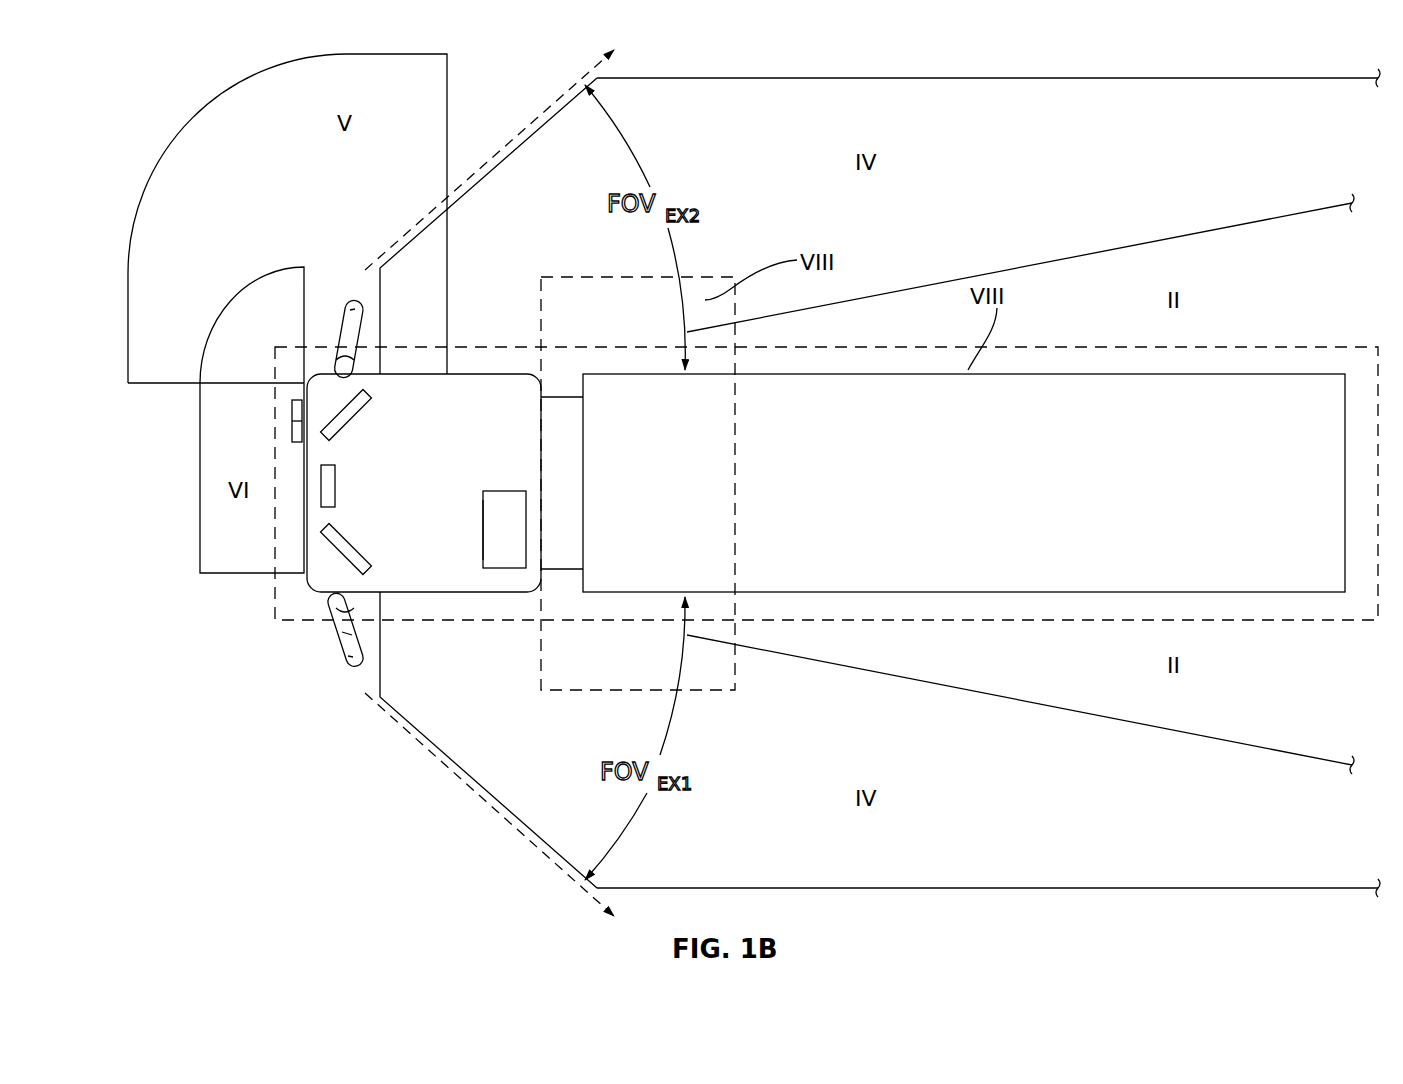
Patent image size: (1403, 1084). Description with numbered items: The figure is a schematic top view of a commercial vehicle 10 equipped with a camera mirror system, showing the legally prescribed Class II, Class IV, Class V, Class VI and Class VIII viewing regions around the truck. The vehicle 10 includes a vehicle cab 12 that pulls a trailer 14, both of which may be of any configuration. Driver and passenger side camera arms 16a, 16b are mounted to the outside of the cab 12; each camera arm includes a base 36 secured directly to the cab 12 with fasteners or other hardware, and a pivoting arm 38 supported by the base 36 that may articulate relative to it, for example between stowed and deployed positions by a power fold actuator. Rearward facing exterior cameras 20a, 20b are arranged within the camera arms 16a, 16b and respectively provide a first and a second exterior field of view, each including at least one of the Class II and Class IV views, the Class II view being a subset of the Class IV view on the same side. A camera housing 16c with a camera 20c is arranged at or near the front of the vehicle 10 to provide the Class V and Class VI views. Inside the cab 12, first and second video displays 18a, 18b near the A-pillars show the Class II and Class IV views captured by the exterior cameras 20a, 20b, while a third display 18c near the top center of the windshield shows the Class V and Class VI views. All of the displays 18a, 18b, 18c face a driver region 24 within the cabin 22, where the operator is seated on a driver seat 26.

The commercial vehicle 10 is at (286, 367).
The vehicle cab 12 is at (303, 583).
The trailer 14 is at (1246, 372).
The driver side camera arm 16a is at (348, 633).
The passenger side camera arm 16b is at (342, 327).
The camera housing 16c is at (293, 430).
The first video display 18a is at (358, 560).
The second video display 18b is at (350, 415).
The third display 18c is at (318, 487).
The exterior camera 20a is at (363, 653).
The exterior camera 20b is at (362, 313).
The front camera 20c is at (293, 407).
The cabin 22 is at (463, 404).
The driver region 24 is at (481, 525).
The driver seat 26 is at (507, 505).
The base 36 is at (347, 600).
The pivoting arm 38 is at (353, 628).